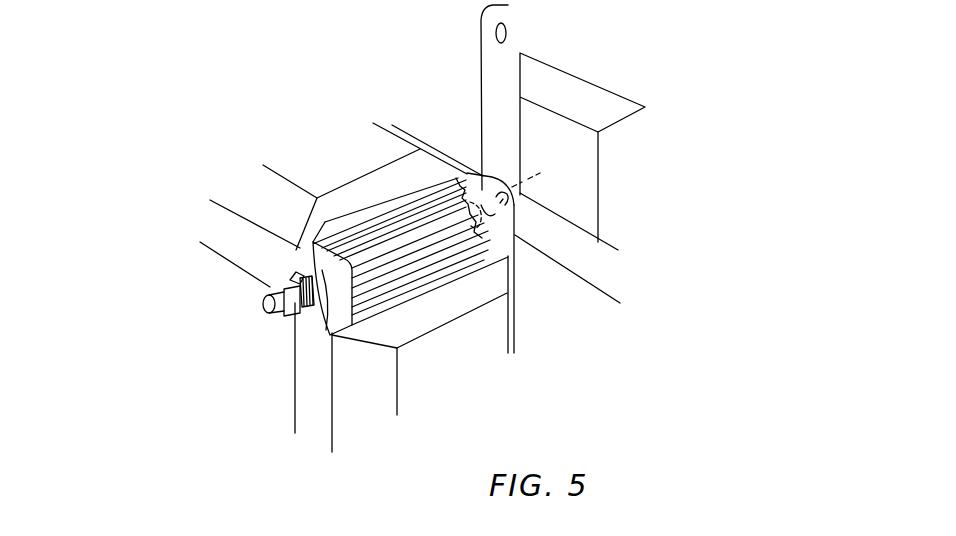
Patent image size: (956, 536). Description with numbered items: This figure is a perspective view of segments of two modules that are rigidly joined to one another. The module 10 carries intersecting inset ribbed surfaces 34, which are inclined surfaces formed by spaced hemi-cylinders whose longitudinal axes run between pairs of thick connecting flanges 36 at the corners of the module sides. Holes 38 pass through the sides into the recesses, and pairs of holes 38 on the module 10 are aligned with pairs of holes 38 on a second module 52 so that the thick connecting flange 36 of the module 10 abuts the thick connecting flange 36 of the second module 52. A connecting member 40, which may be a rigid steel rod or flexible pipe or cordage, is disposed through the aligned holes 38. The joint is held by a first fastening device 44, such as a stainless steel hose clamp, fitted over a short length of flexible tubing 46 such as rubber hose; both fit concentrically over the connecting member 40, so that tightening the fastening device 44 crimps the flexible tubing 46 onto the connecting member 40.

The module 10 is at (178, 212).
The inset ribbed surfaces 34 is at (365, 237).
The thick connecting flanges 36 is at (483, 190).
The holes 38 is at (313, 265).
The connecting member 40 is at (428, 237).
The first fastening device 44 is at (290, 275).
The flexible tubing 46 is at (292, 316).
The second module 52 is at (628, 209).